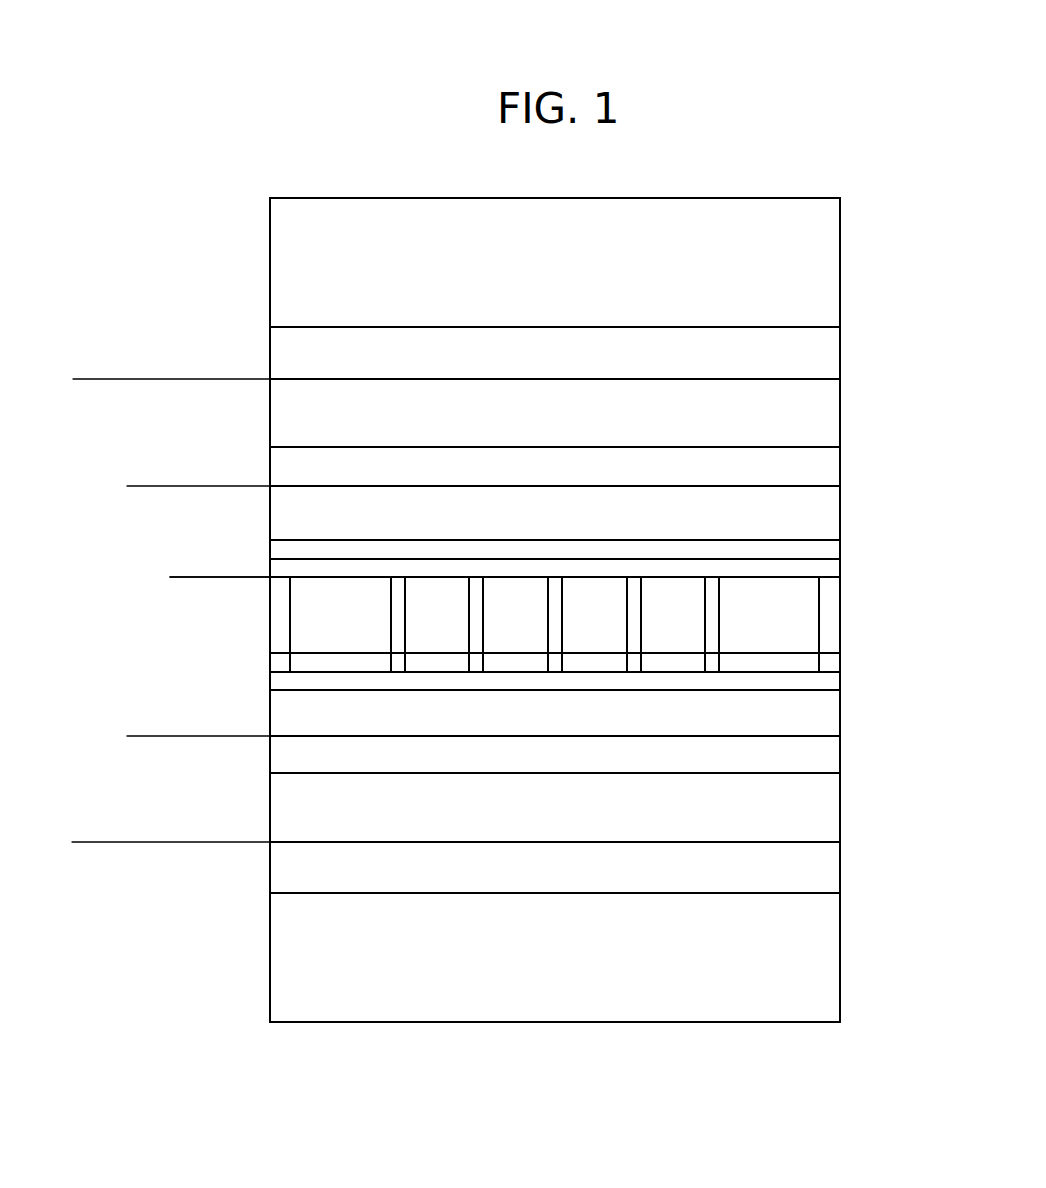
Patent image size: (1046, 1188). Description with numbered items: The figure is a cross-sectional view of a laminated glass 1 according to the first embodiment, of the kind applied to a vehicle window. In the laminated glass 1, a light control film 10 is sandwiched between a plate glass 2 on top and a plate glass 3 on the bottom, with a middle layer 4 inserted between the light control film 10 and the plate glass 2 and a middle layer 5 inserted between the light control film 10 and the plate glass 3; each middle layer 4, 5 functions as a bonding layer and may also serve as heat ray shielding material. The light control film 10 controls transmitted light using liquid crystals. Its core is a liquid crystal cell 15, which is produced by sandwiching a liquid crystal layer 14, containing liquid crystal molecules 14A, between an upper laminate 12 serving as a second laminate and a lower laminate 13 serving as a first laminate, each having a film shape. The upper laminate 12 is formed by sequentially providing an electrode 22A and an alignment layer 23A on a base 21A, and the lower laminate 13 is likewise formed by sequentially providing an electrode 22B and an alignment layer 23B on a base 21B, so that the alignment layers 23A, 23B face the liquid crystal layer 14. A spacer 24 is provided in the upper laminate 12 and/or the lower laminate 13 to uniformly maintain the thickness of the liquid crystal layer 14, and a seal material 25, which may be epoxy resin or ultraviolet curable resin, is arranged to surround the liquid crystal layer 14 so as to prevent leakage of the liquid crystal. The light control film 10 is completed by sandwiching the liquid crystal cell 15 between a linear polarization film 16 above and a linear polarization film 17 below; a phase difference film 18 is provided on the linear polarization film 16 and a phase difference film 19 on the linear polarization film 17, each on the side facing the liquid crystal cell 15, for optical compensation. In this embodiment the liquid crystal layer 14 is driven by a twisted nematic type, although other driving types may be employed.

The laminated glass 1 is at (285, 138).
The plate glass 2 is at (830, 265).
The plate glass 3 is at (830, 955).
The middle layer 4 is at (830, 353).
The middle layer 5 is at (830, 865).
The light control film 10 is at (80, 380).
The upper laminate 12 is at (189, 487).
The lower laminate 13 is at (189, 578).
The liquid crystal layer 14 is at (808, 635).
The liquid crystal molecules 14A is at (555, 624).
The liquid crystal cell 15 is at (135, 487).
The linear polarization film 16 is at (278, 418).
The linear polarization film 17 is at (278, 812).
The phase difference film 18 is at (278, 471).
The phase difference film 19 is at (278, 762).
The base 21A is at (828, 513).
The base 21B is at (832, 720).
The electrode 22A is at (832, 547).
The electrode 22B is at (832, 690).
The alignment layer 23A is at (830, 568).
The alignment layer 23B is at (832, 662).
The spacer 24 is at (712, 657).
The seal material 25 is at (278, 620).